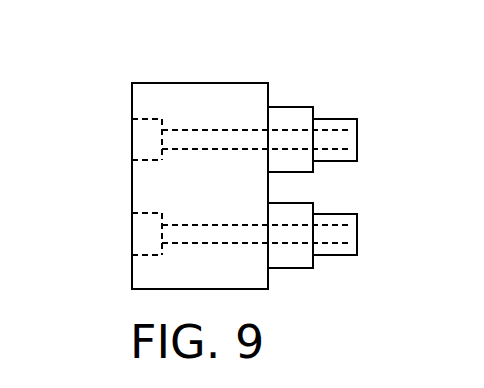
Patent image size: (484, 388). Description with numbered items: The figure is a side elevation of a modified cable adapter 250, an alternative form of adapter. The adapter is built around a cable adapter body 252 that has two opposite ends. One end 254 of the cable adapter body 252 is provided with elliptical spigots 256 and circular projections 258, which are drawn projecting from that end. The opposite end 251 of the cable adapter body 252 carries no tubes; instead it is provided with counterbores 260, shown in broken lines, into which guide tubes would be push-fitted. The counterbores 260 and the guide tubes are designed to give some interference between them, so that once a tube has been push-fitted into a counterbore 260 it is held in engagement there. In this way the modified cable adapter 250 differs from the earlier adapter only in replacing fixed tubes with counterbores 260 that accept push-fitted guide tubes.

The modified cable adapter 250 is at (284, 293).
The end of the cable adapter body 251 is at (132, 100).
The cable adapter body 252 is at (204, 83).
The end of the cable adapter body 254 is at (270, 87).
The elliptical spigots 256 is at (305, 107).
The circular projections 258 is at (356, 161).
The counterbores 260 is at (148, 213).